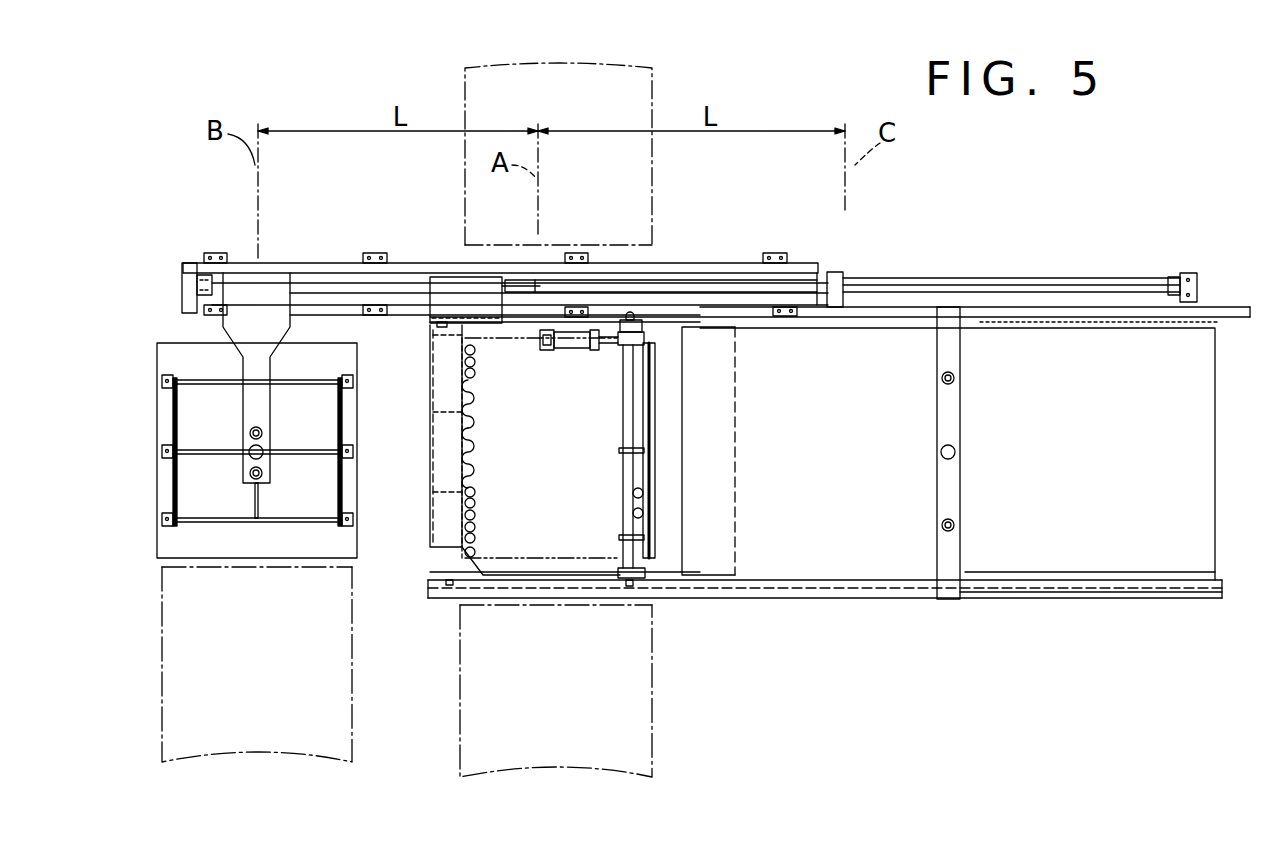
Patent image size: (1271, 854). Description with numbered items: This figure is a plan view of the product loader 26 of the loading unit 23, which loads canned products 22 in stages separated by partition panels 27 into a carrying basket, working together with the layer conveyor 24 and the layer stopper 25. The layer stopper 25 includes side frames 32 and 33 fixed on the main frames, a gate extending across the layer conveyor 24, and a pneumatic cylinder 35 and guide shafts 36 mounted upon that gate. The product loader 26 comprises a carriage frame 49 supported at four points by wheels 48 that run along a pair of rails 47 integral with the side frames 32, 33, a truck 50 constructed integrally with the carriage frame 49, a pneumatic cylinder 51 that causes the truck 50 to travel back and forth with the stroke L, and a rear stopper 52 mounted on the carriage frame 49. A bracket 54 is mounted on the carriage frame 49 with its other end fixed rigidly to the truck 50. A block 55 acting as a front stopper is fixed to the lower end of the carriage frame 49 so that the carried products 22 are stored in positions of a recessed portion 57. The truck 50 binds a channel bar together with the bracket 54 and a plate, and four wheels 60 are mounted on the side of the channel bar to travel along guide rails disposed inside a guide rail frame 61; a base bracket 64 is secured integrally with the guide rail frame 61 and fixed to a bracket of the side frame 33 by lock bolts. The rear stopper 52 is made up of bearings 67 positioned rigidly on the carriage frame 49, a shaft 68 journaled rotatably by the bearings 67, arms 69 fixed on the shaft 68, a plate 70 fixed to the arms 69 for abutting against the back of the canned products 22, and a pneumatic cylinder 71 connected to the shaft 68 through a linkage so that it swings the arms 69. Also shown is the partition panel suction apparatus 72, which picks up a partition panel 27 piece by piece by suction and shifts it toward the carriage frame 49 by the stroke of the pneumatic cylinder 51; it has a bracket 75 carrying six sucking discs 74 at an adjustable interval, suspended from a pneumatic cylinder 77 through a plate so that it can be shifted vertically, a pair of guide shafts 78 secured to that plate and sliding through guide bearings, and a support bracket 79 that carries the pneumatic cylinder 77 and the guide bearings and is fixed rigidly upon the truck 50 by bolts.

The canned products 22 is at (478, 512).
The loading unit 23 is at (880, 205).
The layer conveyor 24 is at (1100, 345).
The layer stopper 25 is at (950, 305).
The product loader 26 is at (700, 225).
The partition panels 27 is at (165, 425).
The side frame 32 is at (1095, 600).
The side frame 33 is at (1028, 312).
The pneumatic cylinder 35 is at (940, 452).
The guide shafts 36 is at (958, 376).
The rails 47 is at (862, 307).
The wheels 48 is at (632, 315).
The carriage frame 49 is at (440, 488).
The truck 50 is at (325, 272).
The pneumatic cylinder 51 is at (920, 280).
The rear stopper 52 is at (680, 342).
The bracket 54 is at (448, 262).
The block 55 is at (462, 423).
The recessed portion 57 is at (462, 462).
The wheels 60 is at (230, 262).
The guide rail frame 61 is at (725, 300).
The base bracket 64 is at (783, 256).
The bearings 67 is at (618, 343).
The shaft 68 is at (625, 420).
The arms 69 is at (630, 435).
The plate 70 is at (650, 480).
The pneumatic cylinder 71 is at (565, 343).
The partition panel suction apparatus 72 is at (165, 480).
The sucking discs 74 is at (165, 385).
The bracket 75 is at (190, 378).
The pneumatic cylinder 77 is at (250, 440).
The guide shafts 78 is at (245, 478).
The support bracket 79 is at (235, 322).